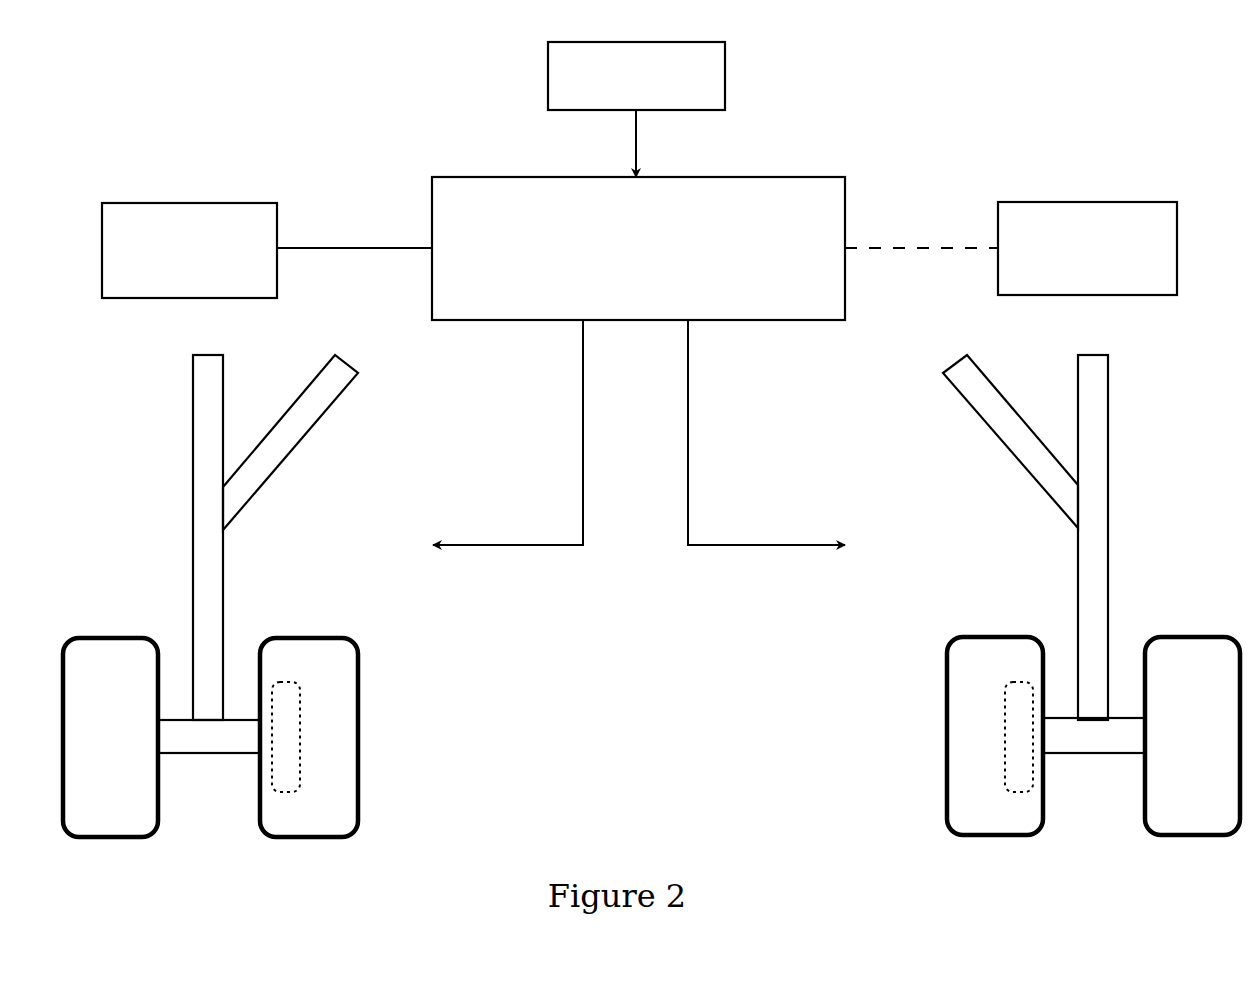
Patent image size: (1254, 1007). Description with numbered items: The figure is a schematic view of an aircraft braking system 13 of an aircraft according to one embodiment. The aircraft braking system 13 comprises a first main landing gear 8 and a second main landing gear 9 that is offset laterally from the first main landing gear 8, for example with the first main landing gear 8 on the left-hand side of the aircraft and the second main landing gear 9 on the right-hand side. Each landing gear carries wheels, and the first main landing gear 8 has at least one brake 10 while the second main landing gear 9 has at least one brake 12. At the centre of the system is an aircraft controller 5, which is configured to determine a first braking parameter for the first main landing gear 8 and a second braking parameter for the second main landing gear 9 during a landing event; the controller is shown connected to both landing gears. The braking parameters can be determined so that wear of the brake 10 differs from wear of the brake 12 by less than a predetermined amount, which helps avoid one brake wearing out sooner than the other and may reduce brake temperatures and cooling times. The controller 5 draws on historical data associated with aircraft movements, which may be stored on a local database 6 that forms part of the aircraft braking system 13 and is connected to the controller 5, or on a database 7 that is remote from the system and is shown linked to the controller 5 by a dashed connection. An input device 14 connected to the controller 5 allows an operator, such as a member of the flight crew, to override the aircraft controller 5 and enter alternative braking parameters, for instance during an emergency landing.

The aircraft controller 5 is at (638, 361).
The local database 6 is at (267, 250).
The remote database 7 is at (1011, 248).
The first main landing gear 8 is at (387, 640).
The second main landing gear 9 is at (937, 643).
The brake 10 is at (308, 738).
The brake 12 is at (993, 715).
The aircraft braking system 13 is at (995, 72).
The input device 14 is at (636, 109).